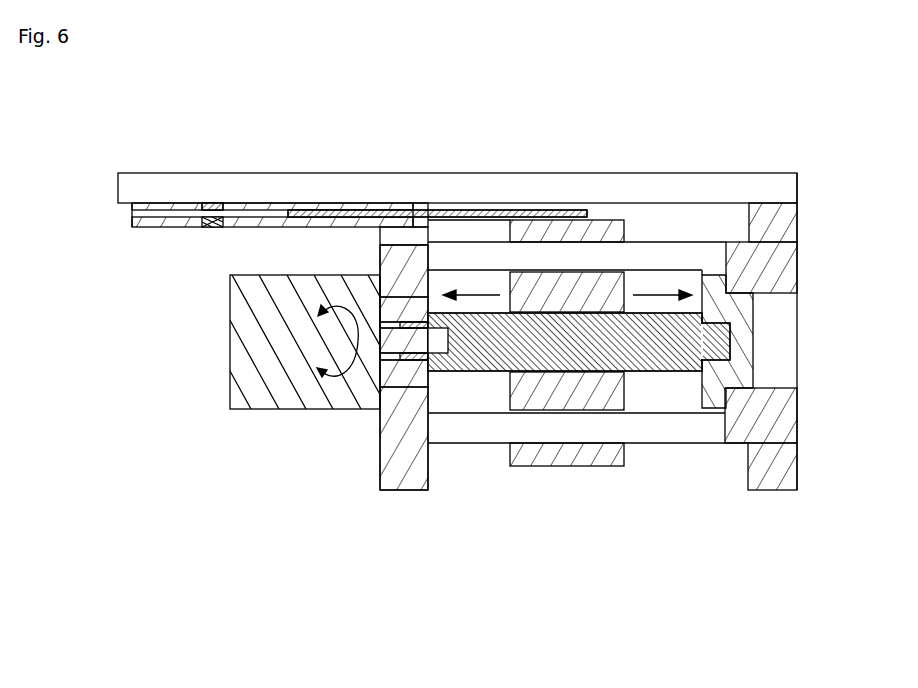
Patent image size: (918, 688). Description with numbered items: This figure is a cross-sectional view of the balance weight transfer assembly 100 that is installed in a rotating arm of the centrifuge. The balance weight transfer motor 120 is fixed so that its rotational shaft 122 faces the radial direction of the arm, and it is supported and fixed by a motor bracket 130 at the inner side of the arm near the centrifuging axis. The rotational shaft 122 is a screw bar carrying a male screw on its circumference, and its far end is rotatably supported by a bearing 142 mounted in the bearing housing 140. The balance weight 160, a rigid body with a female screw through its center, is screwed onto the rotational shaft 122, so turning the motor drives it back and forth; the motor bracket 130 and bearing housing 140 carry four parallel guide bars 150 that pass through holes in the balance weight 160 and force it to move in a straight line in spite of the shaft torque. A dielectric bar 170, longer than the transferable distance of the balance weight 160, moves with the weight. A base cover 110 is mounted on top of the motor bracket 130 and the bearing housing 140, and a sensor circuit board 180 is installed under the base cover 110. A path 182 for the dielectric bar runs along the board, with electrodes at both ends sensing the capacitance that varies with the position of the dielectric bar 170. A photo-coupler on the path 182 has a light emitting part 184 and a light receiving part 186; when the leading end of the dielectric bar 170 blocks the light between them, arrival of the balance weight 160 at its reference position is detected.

The optical scanning device 100 is at (518, 672).
The base cover 110 is at (287, 183).
The balance weight transfer motor 120 is at (242, 377).
The rotational shaft 122 is at (660, 365).
The motor bracket 130 is at (408, 478).
The bearing housing 140 is at (788, 212).
The bearing 142 is at (783, 274).
The guide bar 150 is at (685, 257).
The balance weight 160 is at (553, 453).
The dielectric bar 170 is at (443, 207).
The sensor circuit board 180 is at (177, 222).
The path for the dielectric bar 182 is at (142, 215).
The light emitting part 184 is at (212, 207).
The light receiving part 186 is at (208, 227).